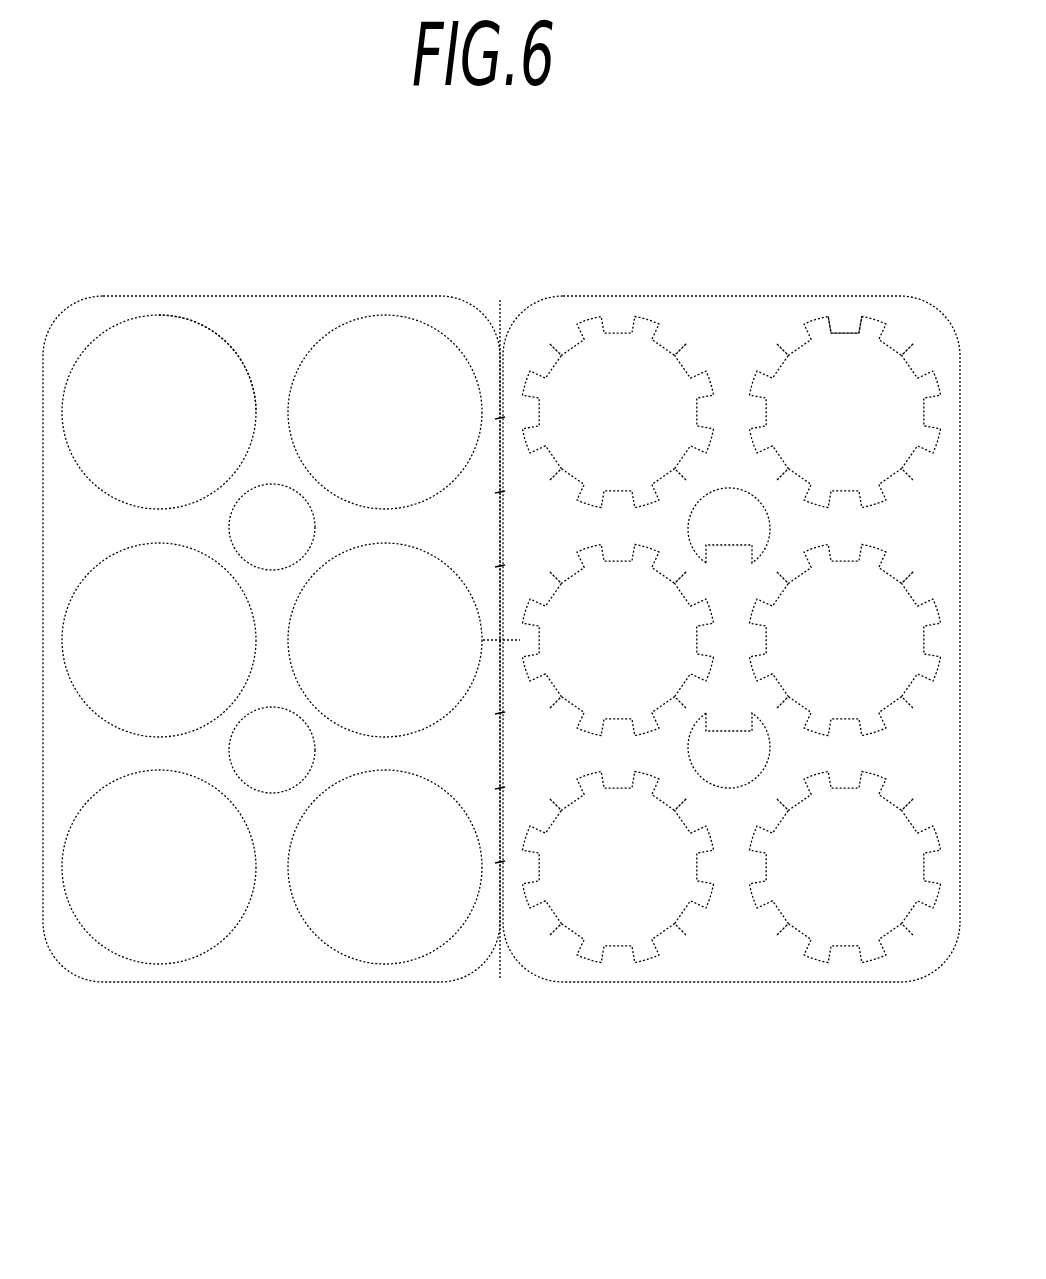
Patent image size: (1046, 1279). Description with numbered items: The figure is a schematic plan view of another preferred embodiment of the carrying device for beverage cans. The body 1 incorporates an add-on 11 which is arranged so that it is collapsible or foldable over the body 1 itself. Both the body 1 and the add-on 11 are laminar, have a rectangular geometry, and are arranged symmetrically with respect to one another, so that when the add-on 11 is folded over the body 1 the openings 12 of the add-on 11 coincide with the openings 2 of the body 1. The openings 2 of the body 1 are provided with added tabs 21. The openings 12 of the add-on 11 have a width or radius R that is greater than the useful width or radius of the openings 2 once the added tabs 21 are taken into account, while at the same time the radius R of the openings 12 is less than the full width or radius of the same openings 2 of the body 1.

The body 1 is at (785, 1027).
The add-on 11 is at (215, 1035).
The openings 12 is at (130, 323).
The openings 2 is at (812, 320).
The tabs 21 is at (847, 322).
The radius R is at (230, 352).